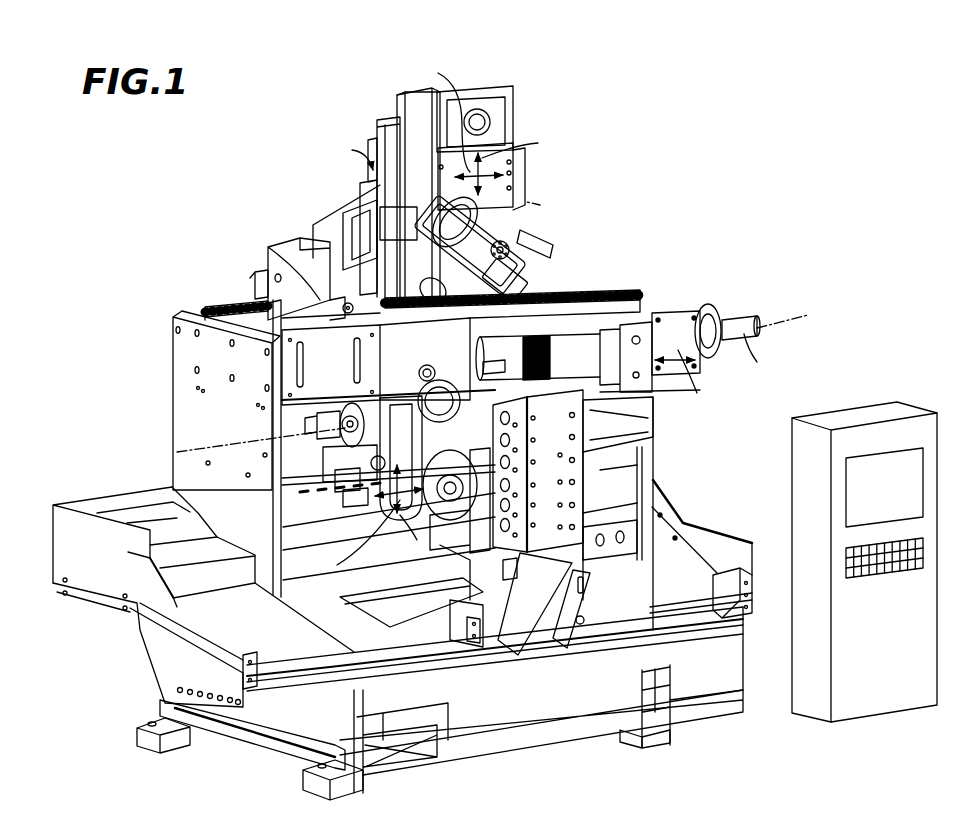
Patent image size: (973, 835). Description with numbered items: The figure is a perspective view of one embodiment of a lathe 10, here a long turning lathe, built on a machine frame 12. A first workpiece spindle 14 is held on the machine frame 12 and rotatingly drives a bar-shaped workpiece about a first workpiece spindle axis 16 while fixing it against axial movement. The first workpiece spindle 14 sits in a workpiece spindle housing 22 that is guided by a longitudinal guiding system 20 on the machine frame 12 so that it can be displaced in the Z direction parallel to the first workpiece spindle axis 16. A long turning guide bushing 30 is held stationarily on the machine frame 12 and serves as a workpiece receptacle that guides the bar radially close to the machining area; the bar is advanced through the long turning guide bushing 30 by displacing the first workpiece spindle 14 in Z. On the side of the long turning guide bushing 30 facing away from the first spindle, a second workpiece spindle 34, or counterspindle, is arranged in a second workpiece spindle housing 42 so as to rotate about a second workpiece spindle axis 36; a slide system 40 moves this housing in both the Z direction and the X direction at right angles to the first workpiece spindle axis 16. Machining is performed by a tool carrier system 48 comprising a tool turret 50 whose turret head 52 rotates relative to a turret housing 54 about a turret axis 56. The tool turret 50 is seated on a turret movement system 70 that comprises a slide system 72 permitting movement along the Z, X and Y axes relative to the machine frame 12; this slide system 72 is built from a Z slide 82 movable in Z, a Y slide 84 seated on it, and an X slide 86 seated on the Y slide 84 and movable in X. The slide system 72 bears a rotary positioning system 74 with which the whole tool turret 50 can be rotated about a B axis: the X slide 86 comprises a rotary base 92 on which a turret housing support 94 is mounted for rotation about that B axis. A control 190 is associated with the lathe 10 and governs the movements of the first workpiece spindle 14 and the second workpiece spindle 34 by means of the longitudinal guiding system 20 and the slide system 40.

The lathe 10 is at (643, 258).
The machine frame 12 is at (695, 517).
The first workpiece spindle 14 is at (636, 310).
The first workpiece spindle axis 16 is at (790, 314).
The longitudinal guiding system 20 is at (552, 300).
The workpiece spindle housing 22 is at (690, 322).
The long turning guide bushing 30 is at (220, 313).
The second workpiece spindle 34 is at (372, 452).
The second workpiece spindle axis 36 is at (197, 445).
The slide system 40 is at (378, 550).
The second workpiece spindle housing 42 is at (385, 395).
The tool carrier system 48 is at (505, 204).
The tool turret 50 is at (398, 200).
The turret head 52 is at (320, 256).
The turret housing 54 is at (506, 278).
The turret axis 56 is at (540, 205).
The turret movement system 70 is at (392, 112).
The slide system 72 is at (375, 152).
The rotary positioning system 74 is at (512, 133).
The Z slide 82 is at (300, 287).
The Y slide 84 is at (340, 222).
The X slide 86 is at (398, 122).
The rotary base 92 is at (518, 178).
The turret housing support 94 is at (545, 247).
The control 190 is at (882, 462).